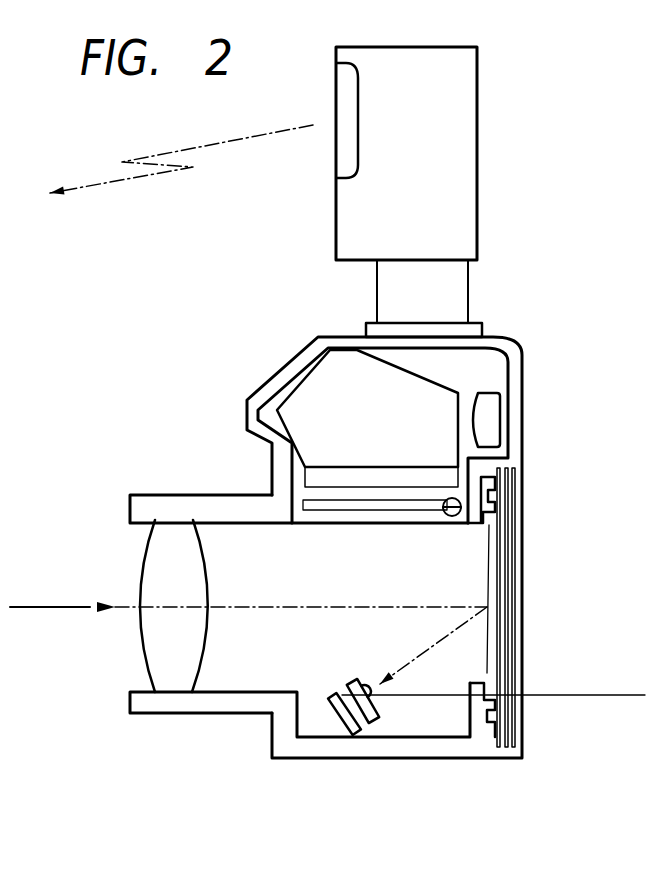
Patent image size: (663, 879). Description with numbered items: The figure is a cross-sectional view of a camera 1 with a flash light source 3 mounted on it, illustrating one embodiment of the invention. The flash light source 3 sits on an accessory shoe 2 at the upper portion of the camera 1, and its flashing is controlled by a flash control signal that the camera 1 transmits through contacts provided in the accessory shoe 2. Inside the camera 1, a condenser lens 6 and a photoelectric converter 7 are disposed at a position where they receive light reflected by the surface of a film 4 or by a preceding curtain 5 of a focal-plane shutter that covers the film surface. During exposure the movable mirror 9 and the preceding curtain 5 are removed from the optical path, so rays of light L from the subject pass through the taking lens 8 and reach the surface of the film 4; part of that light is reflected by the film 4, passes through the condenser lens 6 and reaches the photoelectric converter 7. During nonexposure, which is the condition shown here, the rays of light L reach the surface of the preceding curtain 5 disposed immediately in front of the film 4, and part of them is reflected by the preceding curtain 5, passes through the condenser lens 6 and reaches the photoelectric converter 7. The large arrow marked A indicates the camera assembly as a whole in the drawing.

The camera 1 is at (280, 370).
The accessory shoe 2 is at (478, 322).
The flash light source 3 is at (336, 155).
The film 4 is at (493, 617).
The preceding curtain 5 is at (487, 640).
The condenser lens 6 is at (377, 723).
The photoelectric converter 7 is at (344, 720).
The taking lens 8 is at (155, 573).
The movable mirror 9 is at (303, 504).
The camera unit A is at (165, 465).
The rays of light L is at (55, 609).